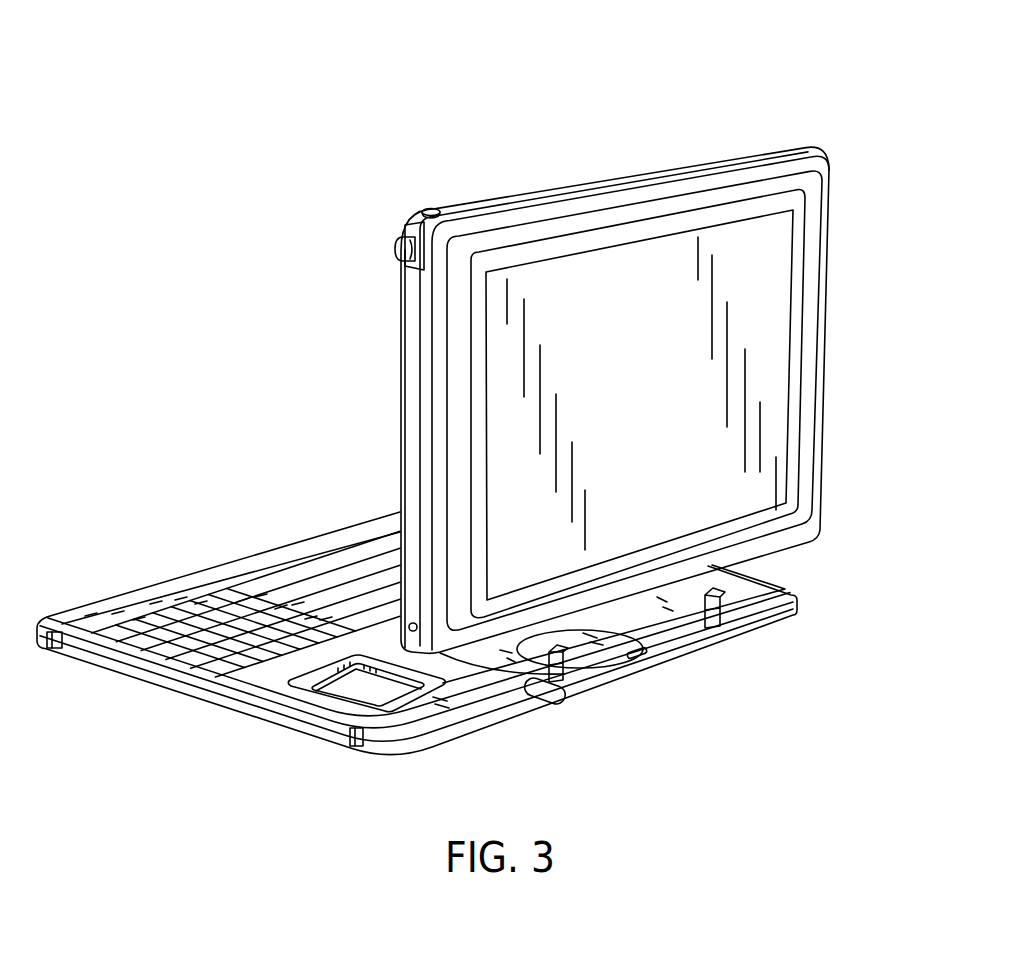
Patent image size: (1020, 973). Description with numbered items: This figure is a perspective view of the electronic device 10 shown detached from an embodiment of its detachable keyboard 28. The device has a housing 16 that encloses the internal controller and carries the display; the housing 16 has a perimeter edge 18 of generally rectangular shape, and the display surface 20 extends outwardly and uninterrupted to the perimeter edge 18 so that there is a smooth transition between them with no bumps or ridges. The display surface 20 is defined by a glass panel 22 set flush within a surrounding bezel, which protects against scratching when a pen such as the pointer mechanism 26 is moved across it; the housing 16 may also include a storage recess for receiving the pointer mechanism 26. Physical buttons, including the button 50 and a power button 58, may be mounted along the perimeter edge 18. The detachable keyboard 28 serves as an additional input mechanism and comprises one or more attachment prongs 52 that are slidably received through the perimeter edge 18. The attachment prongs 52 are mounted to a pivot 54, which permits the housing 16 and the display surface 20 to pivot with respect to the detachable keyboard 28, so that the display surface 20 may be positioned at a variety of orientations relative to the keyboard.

The electronic device 10 is at (464, 420).
The housing 16 is at (832, 215).
The perimeter edge 18 is at (548, 190).
The display surface 20 is at (667, 205).
The glass panel 22 is at (756, 238).
The pointer mechanism 26 is at (393, 248).
The detachable keyboard 28 is at (110, 672).
The physical button 50 is at (406, 228).
The attachment prongs 52 is at (723, 603).
The pivot 54 is at (530, 648).
The power button 58 is at (428, 207).